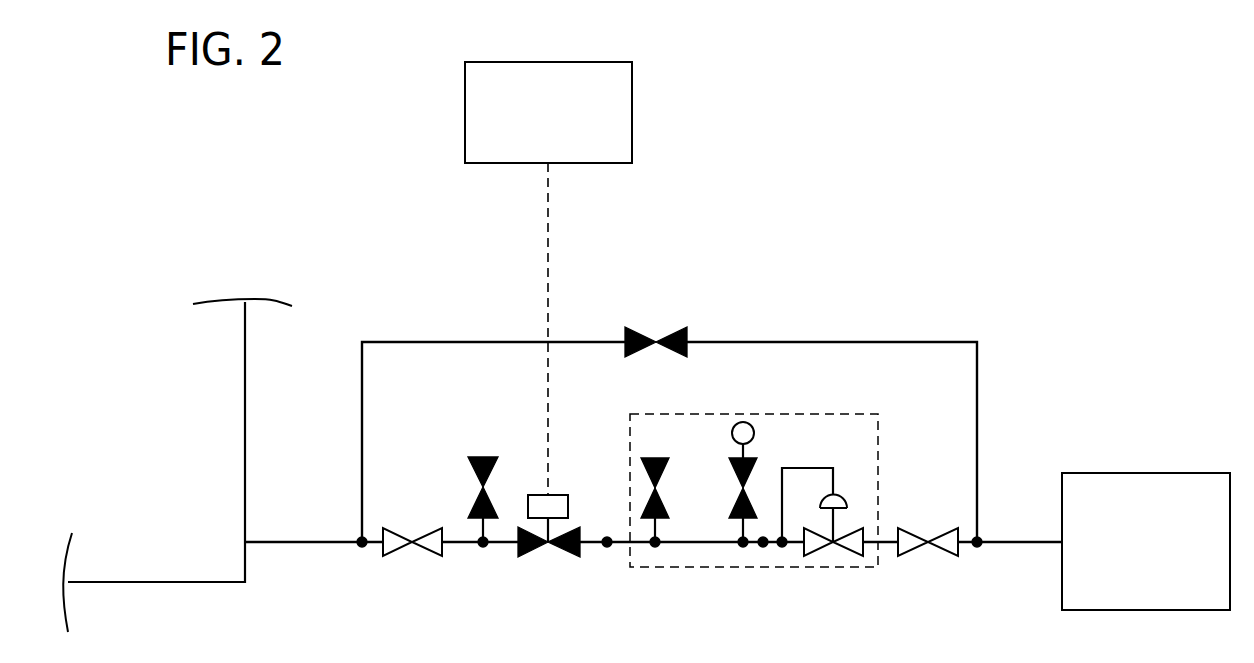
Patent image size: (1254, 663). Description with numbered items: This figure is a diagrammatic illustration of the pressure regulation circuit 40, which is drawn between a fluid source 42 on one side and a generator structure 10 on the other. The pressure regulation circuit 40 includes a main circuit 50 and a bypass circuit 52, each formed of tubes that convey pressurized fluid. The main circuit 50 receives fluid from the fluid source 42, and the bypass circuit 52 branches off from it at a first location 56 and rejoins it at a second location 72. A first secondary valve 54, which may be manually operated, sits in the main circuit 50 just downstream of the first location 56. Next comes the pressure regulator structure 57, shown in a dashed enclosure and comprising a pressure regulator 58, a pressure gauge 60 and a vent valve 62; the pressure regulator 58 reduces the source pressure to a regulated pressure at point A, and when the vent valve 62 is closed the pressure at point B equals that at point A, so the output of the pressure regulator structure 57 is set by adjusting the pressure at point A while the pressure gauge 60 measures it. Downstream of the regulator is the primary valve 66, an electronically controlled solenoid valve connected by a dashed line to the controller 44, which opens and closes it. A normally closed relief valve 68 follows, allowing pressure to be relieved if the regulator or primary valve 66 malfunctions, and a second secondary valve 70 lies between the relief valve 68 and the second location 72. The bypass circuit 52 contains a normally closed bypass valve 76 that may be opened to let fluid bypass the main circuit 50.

The engine 10 is at (230, 603).
The pressure regulation circuit 40 is at (960, 303).
The fluid source 42 is at (1160, 544).
The controller 44 is at (566, 119).
The main circuit 50 is at (688, 545).
The bypass circuit 52 is at (978, 395).
The first secondary valve 54 is at (928, 545).
The first location 56 is at (979, 540).
The pressure regulator structure 57 is at (843, 413).
The pressure regulator 58 is at (833, 558).
The pressure gauge 60 is at (740, 488).
The vent valve 62 is at (652, 488).
The primary valve 66 is at (548, 558).
The relief valve 68 is at (487, 488).
The second secondary valve 70 is at (412, 541).
The second location 72 is at (360, 541).
The bypass valve 76 is at (657, 342).
The point A is at (763, 548).
The point B is at (607, 548).